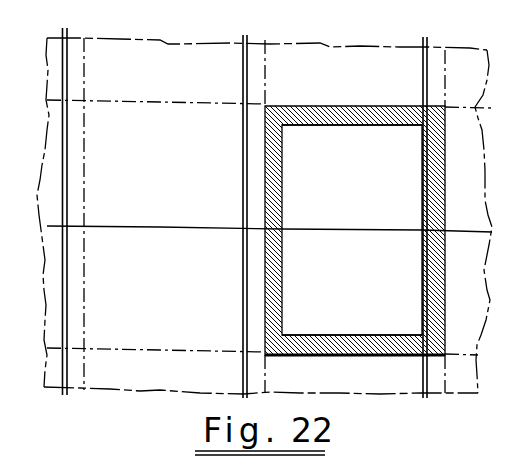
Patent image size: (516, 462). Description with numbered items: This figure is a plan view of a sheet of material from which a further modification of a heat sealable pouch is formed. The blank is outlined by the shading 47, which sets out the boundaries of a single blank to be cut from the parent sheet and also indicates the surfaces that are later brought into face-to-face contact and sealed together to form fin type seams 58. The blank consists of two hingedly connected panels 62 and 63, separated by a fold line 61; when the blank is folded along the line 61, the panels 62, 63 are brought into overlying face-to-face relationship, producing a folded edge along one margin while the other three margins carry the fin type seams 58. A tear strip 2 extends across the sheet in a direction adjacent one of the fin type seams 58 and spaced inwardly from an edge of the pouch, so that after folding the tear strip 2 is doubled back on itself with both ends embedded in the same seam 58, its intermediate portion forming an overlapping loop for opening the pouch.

The tear strip 2 is at (427, 40).
The shaded area 47 is at (271, 152).
The fin type seam 58 is at (515, 316).
The fold line 61 is at (366, 226).
The panel 62 is at (359, 189).
The panel 63 is at (359, 288).